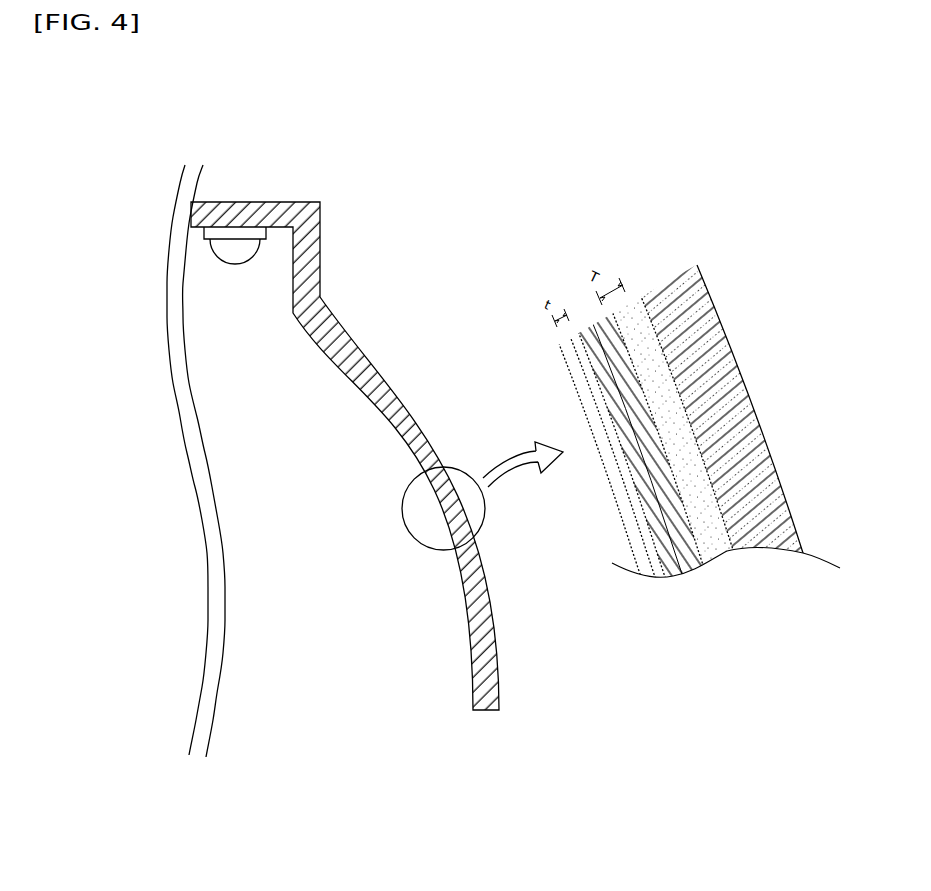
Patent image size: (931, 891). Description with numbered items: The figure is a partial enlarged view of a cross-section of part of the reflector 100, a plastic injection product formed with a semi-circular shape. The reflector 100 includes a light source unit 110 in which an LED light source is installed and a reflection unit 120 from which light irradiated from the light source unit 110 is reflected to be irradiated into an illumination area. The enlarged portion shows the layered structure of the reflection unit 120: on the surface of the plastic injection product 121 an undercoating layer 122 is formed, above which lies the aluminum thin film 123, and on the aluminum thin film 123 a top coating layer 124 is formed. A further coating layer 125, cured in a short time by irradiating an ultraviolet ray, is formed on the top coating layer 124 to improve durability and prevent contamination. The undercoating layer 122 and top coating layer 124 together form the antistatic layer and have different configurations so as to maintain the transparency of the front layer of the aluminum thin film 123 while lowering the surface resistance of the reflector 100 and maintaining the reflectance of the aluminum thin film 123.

The reflector 100 is at (333, 416).
The light source unit 110 is at (321, 258).
The reflection unit 120 is at (455, 597).
The plastic injection product 121 is at (650, 305).
The undercoating layer 122 is at (660, 362).
The aluminum thin film 123 is at (640, 422).
The top coating layer 124 is at (633, 490).
The coating layer 125 is at (637, 548).